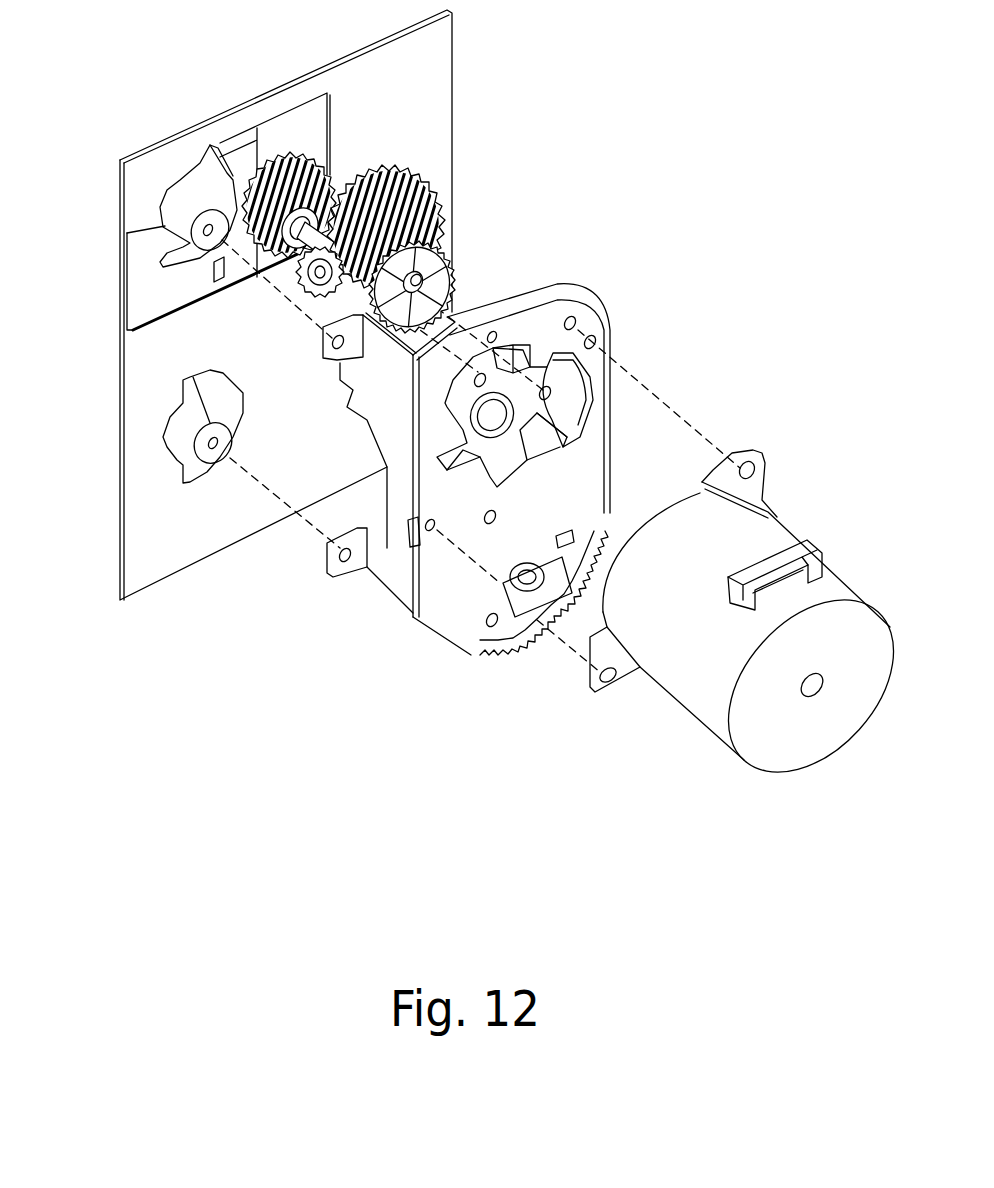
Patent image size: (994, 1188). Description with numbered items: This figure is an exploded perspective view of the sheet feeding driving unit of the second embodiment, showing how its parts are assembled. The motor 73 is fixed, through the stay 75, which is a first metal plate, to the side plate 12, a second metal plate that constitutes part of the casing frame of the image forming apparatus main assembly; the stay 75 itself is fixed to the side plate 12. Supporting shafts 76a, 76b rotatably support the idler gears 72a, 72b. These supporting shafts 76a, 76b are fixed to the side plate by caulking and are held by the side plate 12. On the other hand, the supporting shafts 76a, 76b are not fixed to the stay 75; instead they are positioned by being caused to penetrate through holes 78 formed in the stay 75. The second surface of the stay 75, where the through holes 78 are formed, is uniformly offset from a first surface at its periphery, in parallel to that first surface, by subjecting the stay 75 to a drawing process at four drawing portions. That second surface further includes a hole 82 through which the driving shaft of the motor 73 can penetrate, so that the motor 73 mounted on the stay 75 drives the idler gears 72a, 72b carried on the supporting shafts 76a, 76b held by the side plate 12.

The side plate 12 is at (427, 102).
The idler gear 72a is at (433, 210).
The idler gear 72b is at (305, 190).
The supporting shaft 76a is at (453, 290).
The supporting shaft 76b is at (317, 290).
The through hole 78 is at (547, 353).
The hole 82 is at (577, 452).
The stay 75 is at (452, 597).
The motor 73 is at (783, 743).